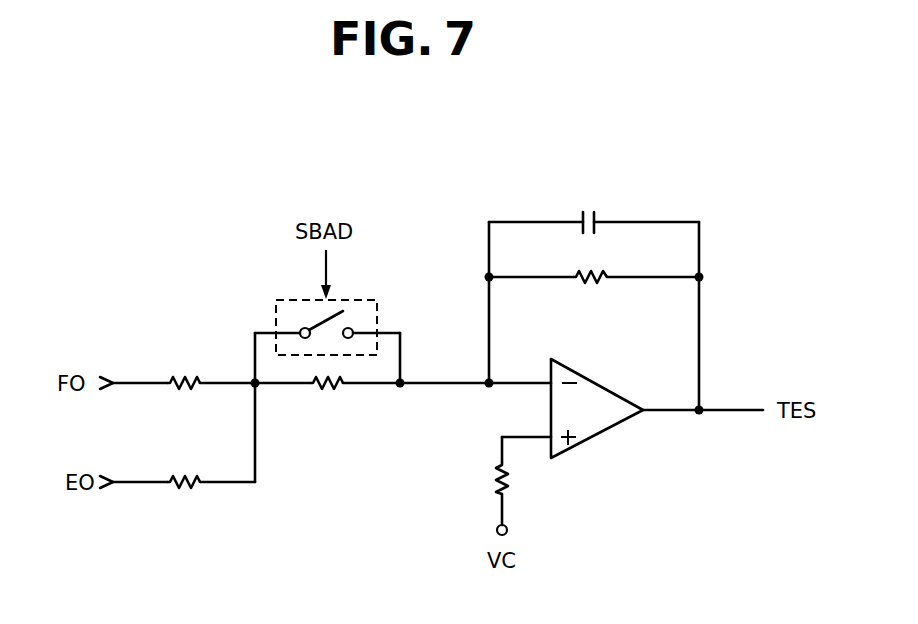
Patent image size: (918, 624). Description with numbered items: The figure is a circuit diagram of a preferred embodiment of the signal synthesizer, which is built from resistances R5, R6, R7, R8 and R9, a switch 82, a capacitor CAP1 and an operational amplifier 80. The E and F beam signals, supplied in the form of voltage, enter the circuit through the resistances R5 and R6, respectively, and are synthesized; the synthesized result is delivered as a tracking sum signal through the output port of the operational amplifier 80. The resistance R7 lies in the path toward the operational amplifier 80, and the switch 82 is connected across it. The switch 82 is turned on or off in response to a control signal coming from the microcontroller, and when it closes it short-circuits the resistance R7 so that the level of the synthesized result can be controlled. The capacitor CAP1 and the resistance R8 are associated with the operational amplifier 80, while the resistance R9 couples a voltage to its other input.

The operational amplifier 80 is at (598, 380).
The switch 82 is at (378, 315).
The resistance R5 is at (183, 366).
The resistance R6 is at (183, 465).
The resistance R7 is at (326, 402).
The resistance R8 is at (590, 294).
The resistance R9 is at (480, 478).
The capacitor CAP1 is at (589, 206).